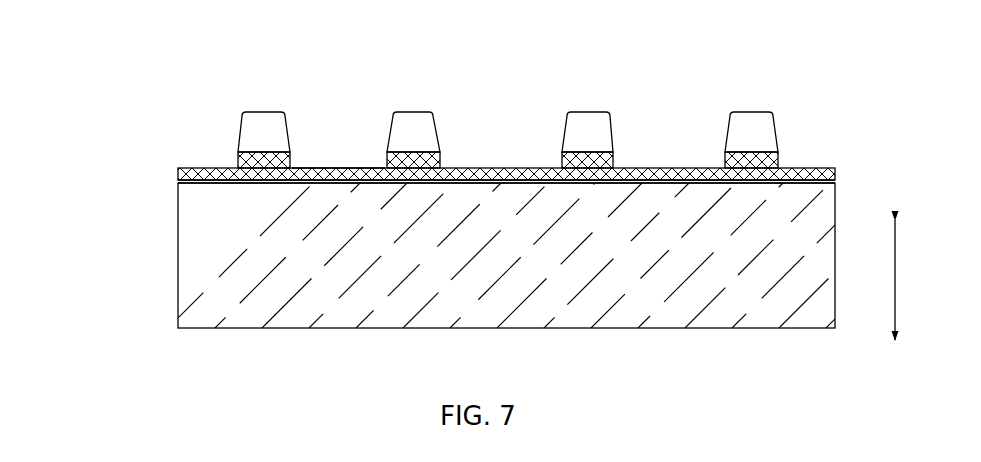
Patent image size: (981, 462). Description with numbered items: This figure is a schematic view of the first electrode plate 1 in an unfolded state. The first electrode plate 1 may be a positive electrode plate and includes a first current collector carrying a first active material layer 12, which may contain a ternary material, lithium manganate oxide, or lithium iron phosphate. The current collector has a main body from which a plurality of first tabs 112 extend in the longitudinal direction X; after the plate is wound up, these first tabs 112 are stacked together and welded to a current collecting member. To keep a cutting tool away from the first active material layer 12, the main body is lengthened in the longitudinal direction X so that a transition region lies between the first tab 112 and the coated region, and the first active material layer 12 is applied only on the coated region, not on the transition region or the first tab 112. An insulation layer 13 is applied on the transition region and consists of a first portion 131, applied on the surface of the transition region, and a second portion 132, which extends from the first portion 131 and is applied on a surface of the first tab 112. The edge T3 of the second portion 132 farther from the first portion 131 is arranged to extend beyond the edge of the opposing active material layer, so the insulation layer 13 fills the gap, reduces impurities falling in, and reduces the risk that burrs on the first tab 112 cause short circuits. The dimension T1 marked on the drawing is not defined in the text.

The first electrode plate 1 is at (119, 137).
The first active material layer 12 is at (186, 280).
The insulation layer 13 is at (549, 153).
The first portion 131 is at (836, 176).
The second portion 132 is at (776, 157).
The first tab 112 is at (286, 126).
The thickness of second layer T1 is at (347, 167).
The edge of the second portion T3 is at (260, 148).
The longitudinal direction X is at (905, 280).